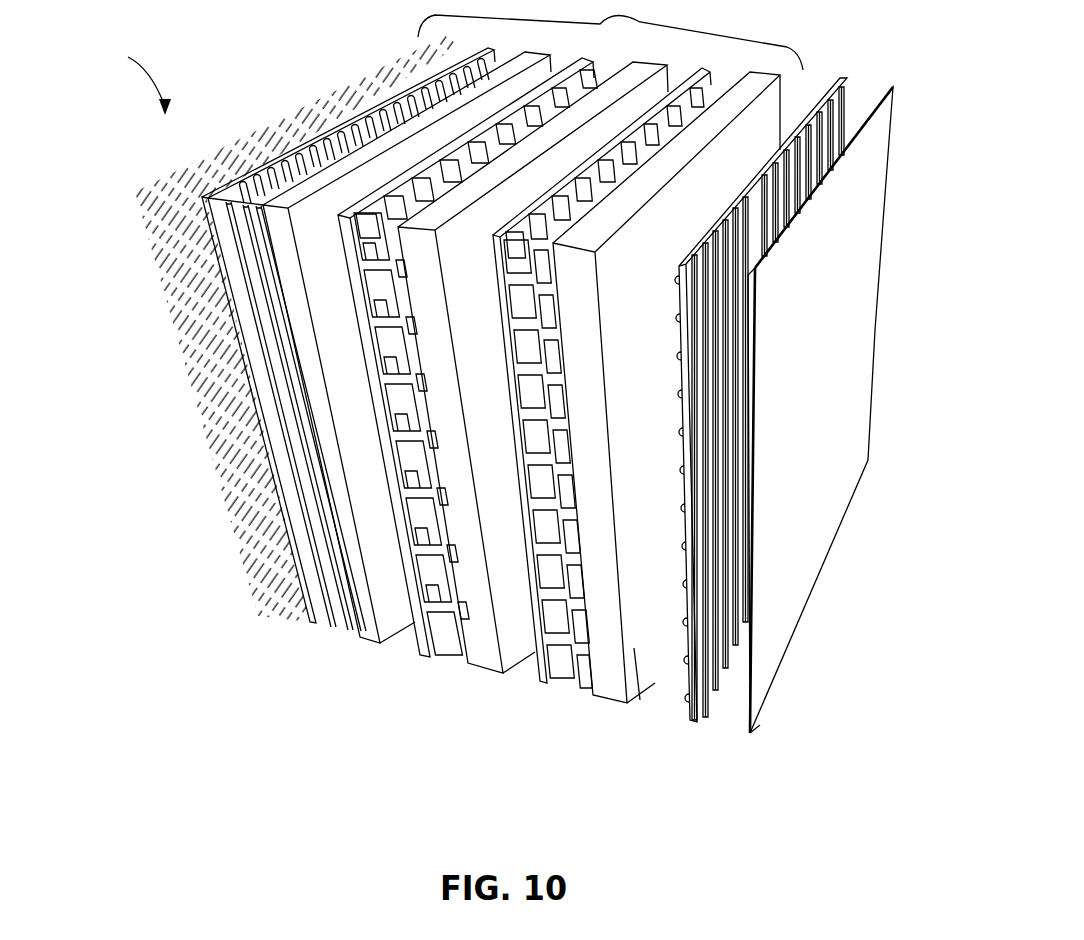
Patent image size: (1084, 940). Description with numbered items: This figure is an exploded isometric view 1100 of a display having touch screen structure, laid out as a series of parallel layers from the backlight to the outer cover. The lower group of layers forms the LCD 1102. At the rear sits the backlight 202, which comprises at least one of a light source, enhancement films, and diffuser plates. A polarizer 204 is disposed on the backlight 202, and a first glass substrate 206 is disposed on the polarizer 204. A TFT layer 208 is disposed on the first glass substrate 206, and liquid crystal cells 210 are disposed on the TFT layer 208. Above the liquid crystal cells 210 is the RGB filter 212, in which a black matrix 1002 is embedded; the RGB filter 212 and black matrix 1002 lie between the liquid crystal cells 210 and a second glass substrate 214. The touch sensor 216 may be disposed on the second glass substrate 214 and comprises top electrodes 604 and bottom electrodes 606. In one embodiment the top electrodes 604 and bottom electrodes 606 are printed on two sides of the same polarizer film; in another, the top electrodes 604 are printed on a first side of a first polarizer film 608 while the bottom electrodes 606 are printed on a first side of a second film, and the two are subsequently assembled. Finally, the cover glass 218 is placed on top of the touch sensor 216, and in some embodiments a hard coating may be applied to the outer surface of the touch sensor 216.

The isometric view 1100 is at (115, 72).
The LCD 1102 is at (610, 35).
The backlight 202 is at (168, 309).
The polarizer 204 is at (307, 568).
The first glass substrate 206 is at (383, 585).
The TFT layer 208 is at (427, 640).
The liquid crystal cells 210 is at (470, 652).
The RGB filter 212 is at (540, 662).
The black matrix 1002 is at (570, 660).
The second glass substrate 214 is at (637, 650).
The touch sensor 216 is at (820, 70).
The top electrodes 604 is at (847, 95).
The bottom electrodes 606 is at (682, 355).
The first polarizer film 608 is at (710, 695).
The cover glass 218 is at (863, 350).